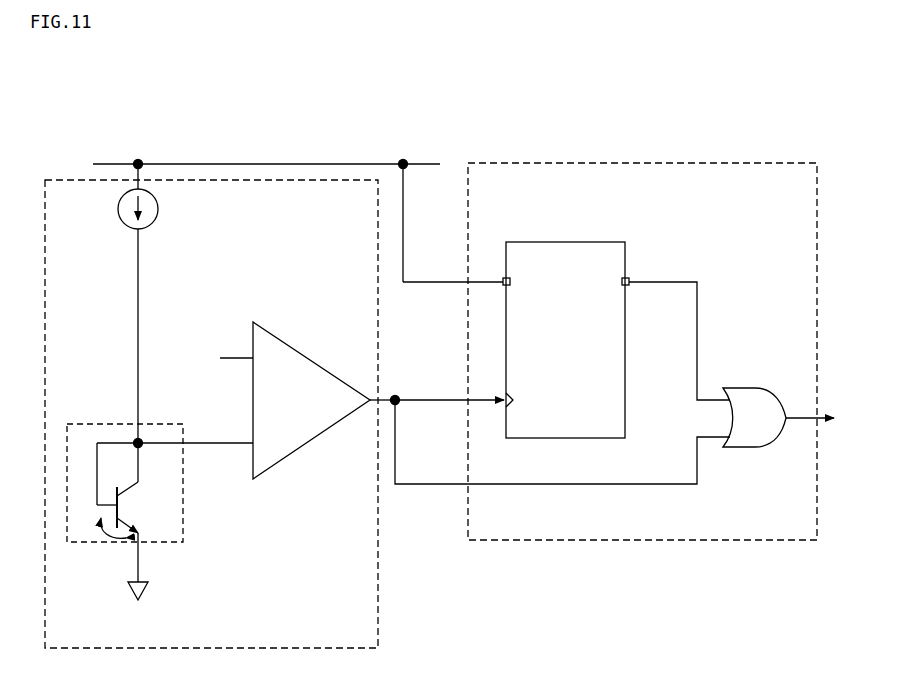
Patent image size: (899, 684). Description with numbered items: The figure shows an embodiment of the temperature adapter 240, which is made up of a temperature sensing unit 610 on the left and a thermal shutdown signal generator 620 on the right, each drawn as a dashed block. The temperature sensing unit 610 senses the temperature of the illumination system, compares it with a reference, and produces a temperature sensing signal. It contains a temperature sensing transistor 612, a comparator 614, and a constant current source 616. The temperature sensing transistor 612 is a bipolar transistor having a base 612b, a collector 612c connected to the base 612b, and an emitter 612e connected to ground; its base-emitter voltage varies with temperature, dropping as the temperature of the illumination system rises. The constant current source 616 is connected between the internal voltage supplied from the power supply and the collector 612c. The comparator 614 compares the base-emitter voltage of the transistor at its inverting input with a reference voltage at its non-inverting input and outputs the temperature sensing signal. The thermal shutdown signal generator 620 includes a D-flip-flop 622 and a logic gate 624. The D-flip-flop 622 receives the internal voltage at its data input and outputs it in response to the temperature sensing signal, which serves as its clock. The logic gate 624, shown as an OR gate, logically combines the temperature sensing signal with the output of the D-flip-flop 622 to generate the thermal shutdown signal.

The temperature adapter 240 is at (740, 112).
The temperature sensing unit 610 is at (378, 617).
The temperature sensing transistor 612 is at (185, 515).
The base 612b is at (112, 503).
The collector 612c is at (140, 470).
The emitter 612e is at (135, 556).
The comparator 614 is at (305, 352).
The constant current source 616 is at (158, 209).
The thermal shutdown signal generator 620 is at (643, 163).
The D-flip-flop 622 is at (627, 361).
The logic gate 624 is at (740, 388).